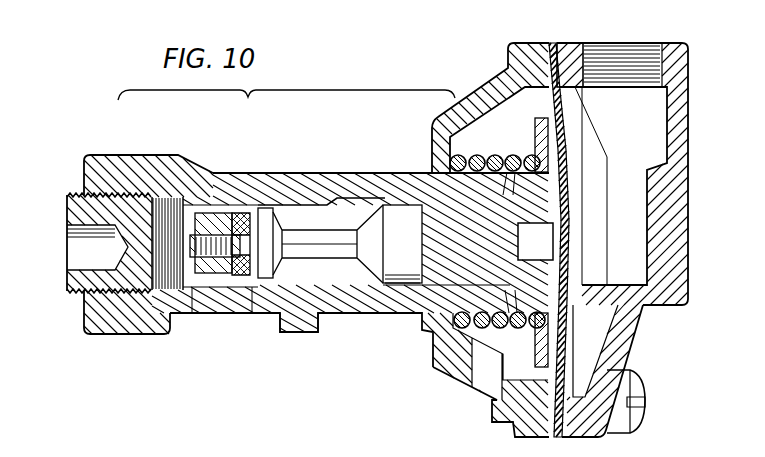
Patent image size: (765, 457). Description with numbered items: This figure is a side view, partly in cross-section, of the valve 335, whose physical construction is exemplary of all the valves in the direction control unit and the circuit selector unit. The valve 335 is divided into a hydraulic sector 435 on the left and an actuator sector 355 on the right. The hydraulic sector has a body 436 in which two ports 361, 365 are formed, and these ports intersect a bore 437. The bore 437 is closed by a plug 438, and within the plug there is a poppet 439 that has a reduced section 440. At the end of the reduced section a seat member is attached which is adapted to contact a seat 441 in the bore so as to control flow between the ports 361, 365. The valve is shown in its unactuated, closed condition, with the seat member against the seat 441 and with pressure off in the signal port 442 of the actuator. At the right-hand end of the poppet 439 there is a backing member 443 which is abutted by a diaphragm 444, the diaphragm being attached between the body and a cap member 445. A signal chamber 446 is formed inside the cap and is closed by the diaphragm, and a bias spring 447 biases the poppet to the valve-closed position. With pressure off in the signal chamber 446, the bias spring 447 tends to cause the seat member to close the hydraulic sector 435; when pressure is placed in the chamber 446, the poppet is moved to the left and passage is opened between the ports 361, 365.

The valve 335 is at (66, 296).
The actuator sector 355 is at (695, 88).
The port 361 is at (278, 331).
The port 365 is at (322, 333).
The hydraulic sector 435 is at (286, 105).
The body 436 is at (113, 337).
The bore 437 is at (183, 203).
The plug 438 is at (72, 275).
The poppet 439 is at (413, 284).
The reduced section 440 is at (293, 232).
The seat 441 is at (247, 284).
The signal port 442 is at (586, 52).
The backing member 443 is at (500, 107).
The diaphragm 444 is at (569, 117).
The cap member 445 is at (657, 308).
The signal chamber 446 is at (637, 208).
The bias spring 447 is at (482, 329).